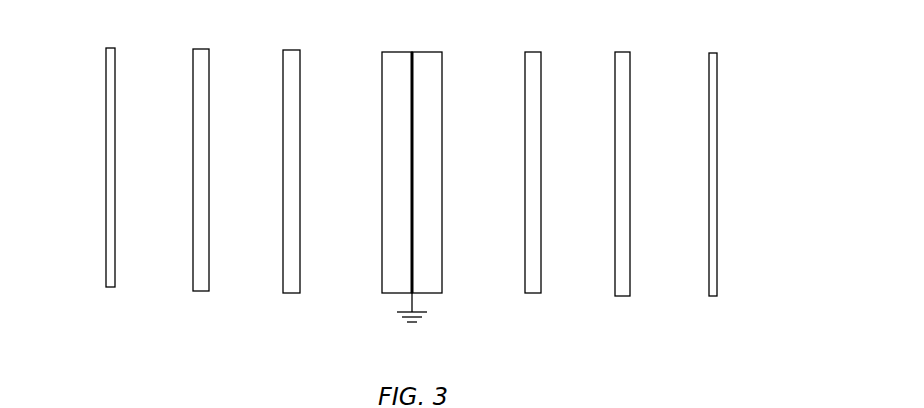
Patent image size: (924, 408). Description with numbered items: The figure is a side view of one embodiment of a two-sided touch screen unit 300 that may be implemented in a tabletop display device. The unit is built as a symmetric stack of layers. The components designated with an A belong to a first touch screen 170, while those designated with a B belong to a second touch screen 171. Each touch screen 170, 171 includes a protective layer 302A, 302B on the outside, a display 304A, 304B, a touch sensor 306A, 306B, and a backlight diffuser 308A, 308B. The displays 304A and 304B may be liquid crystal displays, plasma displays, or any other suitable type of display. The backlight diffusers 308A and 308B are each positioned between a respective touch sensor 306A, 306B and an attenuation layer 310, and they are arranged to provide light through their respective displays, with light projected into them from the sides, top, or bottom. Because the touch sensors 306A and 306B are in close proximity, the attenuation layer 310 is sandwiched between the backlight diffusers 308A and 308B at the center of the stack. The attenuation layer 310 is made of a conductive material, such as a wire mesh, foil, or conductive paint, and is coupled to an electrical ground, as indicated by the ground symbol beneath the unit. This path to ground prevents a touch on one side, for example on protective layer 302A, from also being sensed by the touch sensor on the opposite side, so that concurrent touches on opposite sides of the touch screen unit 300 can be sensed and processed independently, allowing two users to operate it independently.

The touch screen unit 300 is at (855, 162).
The protective layer 302A is at (116, 170).
The protective layer 302B is at (717, 239).
The display 304A is at (209, 188).
The display 304B is at (630, 205).
The touch sensor 306A is at (300, 153).
The touch sensor 306B is at (541, 219).
The backlight diffuser 308A is at (382, 188).
The backlight diffuser 308B is at (442, 172).
The attenuation layer 310 is at (413, 202).
The touch screen 170 is at (82, 348).
The touch screen 171 is at (423, 353).